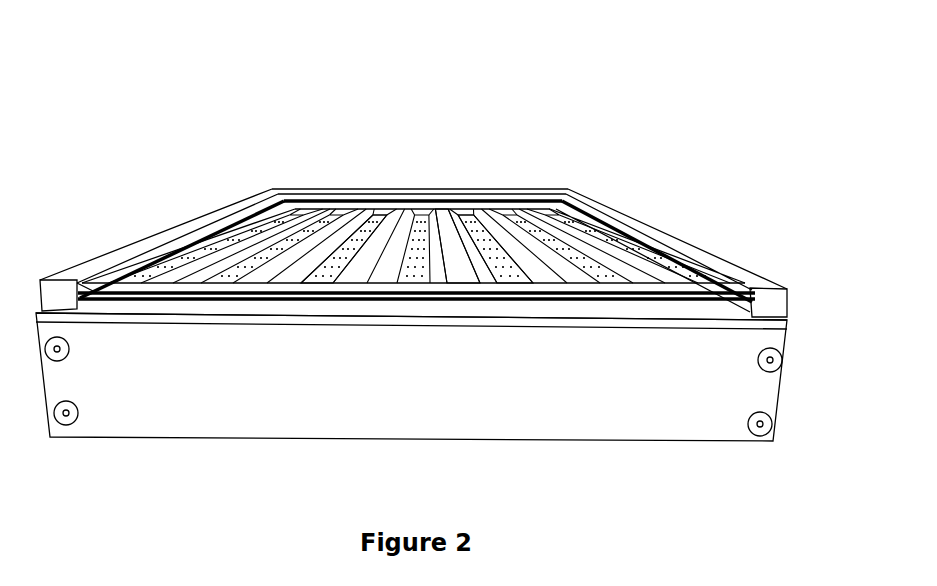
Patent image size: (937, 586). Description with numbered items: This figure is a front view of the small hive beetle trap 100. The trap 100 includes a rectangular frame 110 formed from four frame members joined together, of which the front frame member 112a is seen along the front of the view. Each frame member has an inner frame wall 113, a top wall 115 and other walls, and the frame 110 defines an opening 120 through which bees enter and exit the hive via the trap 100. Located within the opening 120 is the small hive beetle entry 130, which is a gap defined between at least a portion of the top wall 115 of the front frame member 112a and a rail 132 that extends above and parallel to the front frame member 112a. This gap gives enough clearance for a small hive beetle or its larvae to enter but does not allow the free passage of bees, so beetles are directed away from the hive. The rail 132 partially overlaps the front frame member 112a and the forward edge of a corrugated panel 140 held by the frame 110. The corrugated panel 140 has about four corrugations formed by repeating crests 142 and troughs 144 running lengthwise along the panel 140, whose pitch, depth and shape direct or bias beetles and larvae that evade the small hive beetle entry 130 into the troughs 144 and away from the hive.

The trap 100 is at (667, 182).
The frame 110 is at (790, 324).
The front frame member 112a is at (300, 380).
The inner frame wall 113 is at (80, 307).
The top wall 115 is at (485, 316).
The opening 120 is at (341, 311).
The small hive beetle entry 130 is at (436, 299).
The rail 132 is at (287, 288).
The corrugated panel 140 is at (372, 226).
The crests 142 is at (452, 226).
The troughs 144 is at (493, 240).